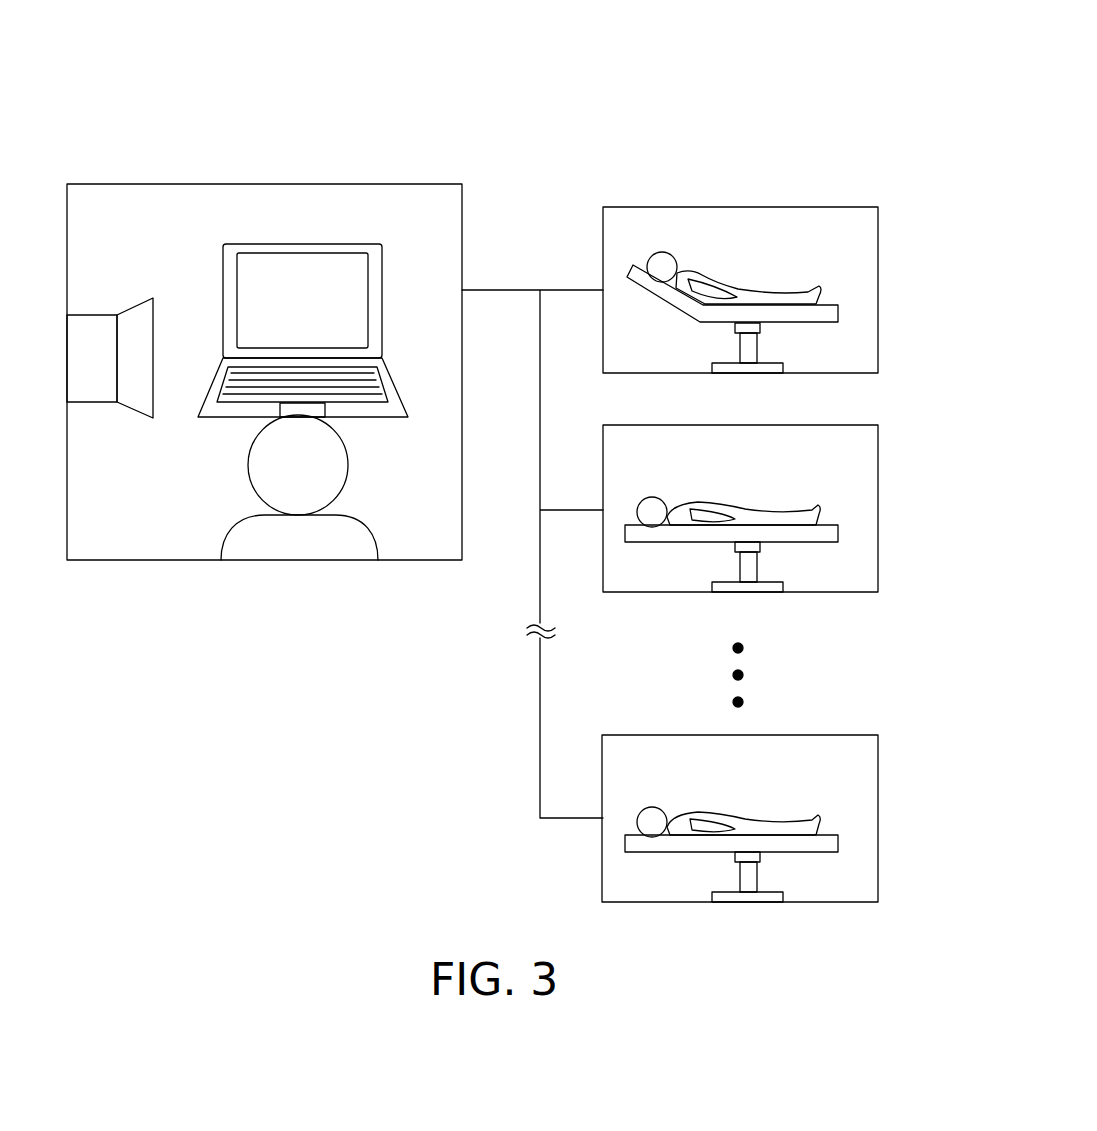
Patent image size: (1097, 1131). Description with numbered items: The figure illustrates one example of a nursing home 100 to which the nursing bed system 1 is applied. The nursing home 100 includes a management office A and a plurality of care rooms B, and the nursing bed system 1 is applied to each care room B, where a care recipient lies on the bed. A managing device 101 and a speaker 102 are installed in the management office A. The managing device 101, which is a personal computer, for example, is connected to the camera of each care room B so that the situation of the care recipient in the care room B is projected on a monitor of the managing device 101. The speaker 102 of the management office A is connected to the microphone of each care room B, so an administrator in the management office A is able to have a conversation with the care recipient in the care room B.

The nursing home 100 is at (808, 116).
The management office A is at (422, 183).
The managing device 101 is at (385, 262).
The speaker 102 is at (90, 313).
The care room B is at (880, 290).
The nursing bed system 1 is at (841, 277).